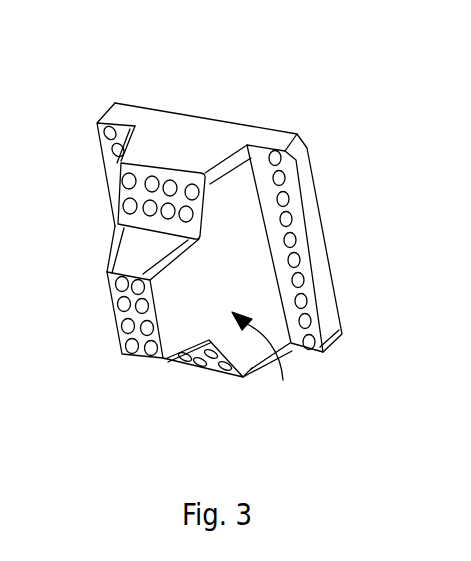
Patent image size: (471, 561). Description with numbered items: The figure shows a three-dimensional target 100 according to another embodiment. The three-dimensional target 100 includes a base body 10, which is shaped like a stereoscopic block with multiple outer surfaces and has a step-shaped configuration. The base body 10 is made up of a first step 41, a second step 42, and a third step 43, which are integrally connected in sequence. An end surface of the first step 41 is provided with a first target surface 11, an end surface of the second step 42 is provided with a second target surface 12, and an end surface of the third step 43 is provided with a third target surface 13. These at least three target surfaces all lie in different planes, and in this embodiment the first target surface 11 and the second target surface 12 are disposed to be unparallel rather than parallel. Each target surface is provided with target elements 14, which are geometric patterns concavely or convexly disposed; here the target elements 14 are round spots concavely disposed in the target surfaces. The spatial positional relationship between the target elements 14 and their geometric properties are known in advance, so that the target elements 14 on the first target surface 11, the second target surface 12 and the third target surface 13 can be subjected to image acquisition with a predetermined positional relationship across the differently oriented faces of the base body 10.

The three-dimensional target 100 is at (138, 56).
The base body 10 is at (199, 259).
The first target surface 11 is at (129, 317).
The second target surface 12 is at (160, 180).
The third target surface 13 is at (292, 190).
The target elements 14 is at (137, 338).
The first step 41 is at (138, 259).
The second step 42 is at (215, 155).
The third step 43 is at (317, 248).